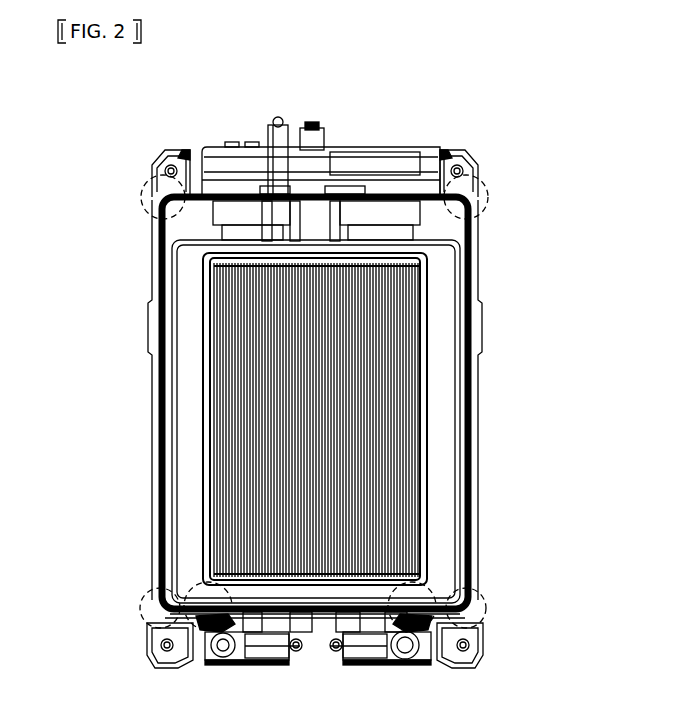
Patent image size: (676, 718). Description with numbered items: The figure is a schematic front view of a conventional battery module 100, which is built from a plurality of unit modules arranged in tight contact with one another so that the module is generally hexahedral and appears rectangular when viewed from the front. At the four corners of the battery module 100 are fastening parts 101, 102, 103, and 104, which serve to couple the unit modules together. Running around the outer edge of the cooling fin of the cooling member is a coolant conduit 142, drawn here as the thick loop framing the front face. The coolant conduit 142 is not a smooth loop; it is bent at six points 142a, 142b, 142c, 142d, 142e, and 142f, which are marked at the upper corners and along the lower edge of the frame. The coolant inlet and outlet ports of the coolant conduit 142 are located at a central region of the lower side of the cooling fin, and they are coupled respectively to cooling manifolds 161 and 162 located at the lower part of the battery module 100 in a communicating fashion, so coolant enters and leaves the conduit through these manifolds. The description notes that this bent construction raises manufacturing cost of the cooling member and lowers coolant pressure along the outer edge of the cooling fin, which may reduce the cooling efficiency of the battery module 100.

The battery module 100 is at (126, 118).
The fastening part 101 is at (156, 150).
The fastening part 102 is at (470, 150).
The fastening part 103 is at (463, 668).
The fastening part 104 is at (168, 668).
The coolant conduit 142 is at (483, 393).
The bent point 142a is at (148, 204).
The bent point 142b is at (488, 202).
The bent point 142c is at (488, 607).
The bent point 142d is at (426, 588).
The bent point 142e is at (200, 588).
The bent point 142f is at (140, 607).
The cooling manifold 161 is at (408, 665).
The cooling manifold 162 is at (232, 665).